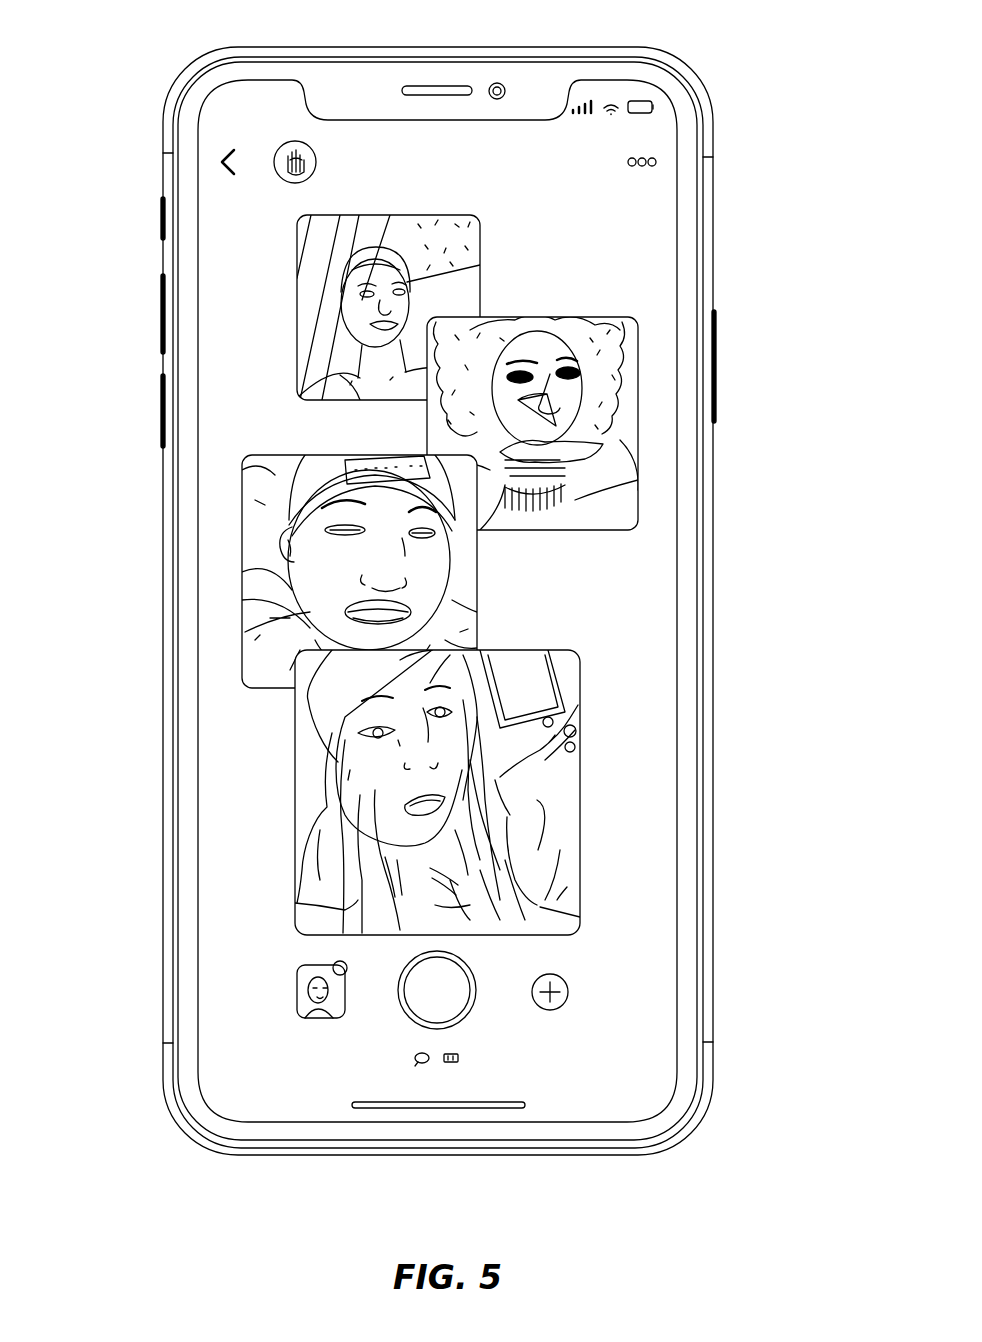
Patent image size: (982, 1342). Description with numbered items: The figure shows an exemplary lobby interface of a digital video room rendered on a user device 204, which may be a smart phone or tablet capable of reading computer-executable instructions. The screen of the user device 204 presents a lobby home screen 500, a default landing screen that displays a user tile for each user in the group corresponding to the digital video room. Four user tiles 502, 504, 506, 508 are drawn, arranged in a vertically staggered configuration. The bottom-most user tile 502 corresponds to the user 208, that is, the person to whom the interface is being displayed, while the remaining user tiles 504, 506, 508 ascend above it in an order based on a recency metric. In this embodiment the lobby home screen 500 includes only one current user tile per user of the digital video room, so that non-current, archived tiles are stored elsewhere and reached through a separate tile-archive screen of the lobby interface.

The user device 204 is at (110, 100).
The lobby home screen 500 is at (613, 233).
The user tile 502 is at (294, 815).
The user tile 504 is at (241, 641).
The user tile 506 is at (426, 425).
The user tile 508 is at (296, 297).
The user 208 is at (558, 853).